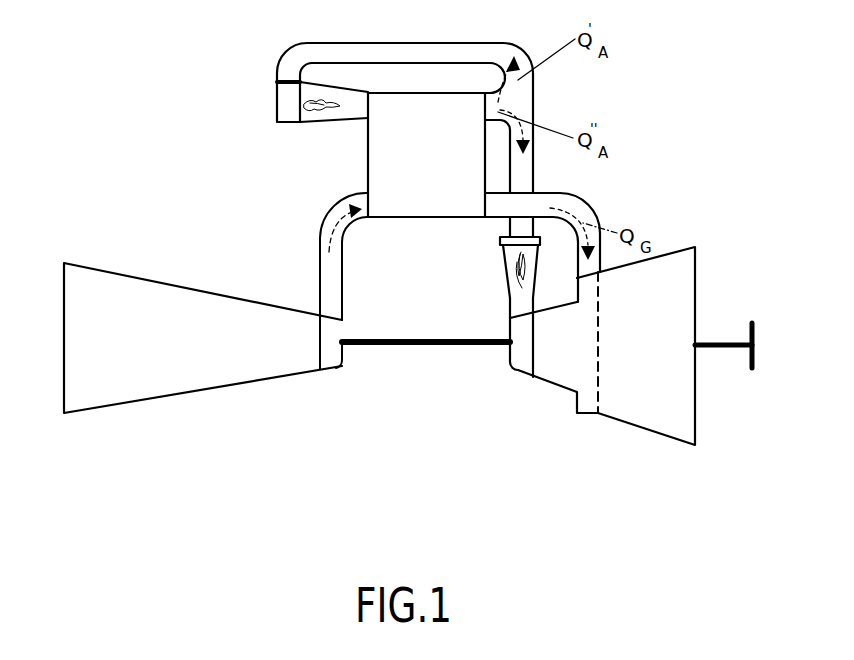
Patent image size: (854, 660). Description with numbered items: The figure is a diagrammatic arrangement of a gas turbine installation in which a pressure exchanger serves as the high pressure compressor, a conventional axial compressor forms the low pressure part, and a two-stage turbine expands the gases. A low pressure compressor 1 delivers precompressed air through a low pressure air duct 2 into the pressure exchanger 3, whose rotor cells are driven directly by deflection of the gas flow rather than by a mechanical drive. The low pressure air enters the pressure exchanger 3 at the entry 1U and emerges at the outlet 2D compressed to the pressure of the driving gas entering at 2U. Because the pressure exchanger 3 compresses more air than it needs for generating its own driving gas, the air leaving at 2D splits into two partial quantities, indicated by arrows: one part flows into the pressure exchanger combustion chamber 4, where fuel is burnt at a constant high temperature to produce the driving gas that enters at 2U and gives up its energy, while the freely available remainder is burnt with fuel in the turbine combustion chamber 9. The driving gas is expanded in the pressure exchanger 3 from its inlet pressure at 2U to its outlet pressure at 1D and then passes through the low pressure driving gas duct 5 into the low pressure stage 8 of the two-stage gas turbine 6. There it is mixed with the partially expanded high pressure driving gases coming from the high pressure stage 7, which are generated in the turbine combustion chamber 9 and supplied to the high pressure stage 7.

The low pressure compressor 1 is at (126, 350).
The low pressure air duct 2 is at (328, 279).
The pressure exchanger 3 is at (437, 156).
The pressure exchanger combustion chamber 4 is at (288, 108).
The low pressure driving gas duct 5 is at (497, 208).
The two-stage gas turbine 6 is at (698, 268).
The high pressure stage 7 is at (572, 356).
The low pressure stage 8 is at (651, 356).
The turbine combustion chamber 9 is at (500, 249).
The low pressure air entry 1U is at (352, 203).
The driving gas outlet 1D is at (523, 204).
The driving gas entry 2U is at (357, 106).
The compressed air outlet 2D is at (422, 118).